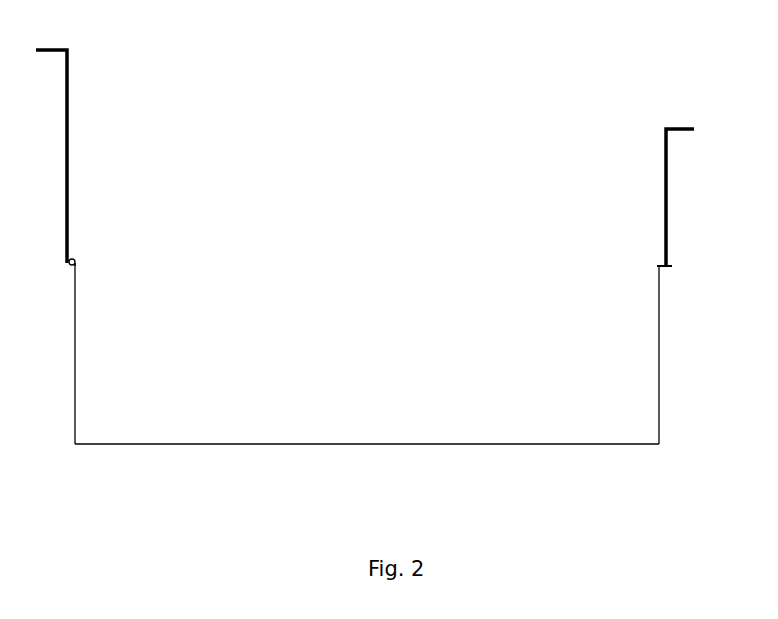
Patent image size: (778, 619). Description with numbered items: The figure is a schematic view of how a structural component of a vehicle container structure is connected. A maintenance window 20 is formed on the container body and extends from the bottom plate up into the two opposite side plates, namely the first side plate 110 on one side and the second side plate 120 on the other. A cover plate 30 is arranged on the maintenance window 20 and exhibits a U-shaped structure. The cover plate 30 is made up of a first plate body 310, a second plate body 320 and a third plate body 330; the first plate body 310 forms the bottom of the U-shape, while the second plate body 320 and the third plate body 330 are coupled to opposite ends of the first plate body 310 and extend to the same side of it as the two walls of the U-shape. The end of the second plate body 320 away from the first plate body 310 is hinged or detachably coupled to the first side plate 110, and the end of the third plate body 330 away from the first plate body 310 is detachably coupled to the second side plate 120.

The maintenance window 20 is at (408, 459).
The cover plate 30 is at (392, 353).
The first side plate 110 is at (69, 170).
The second side plate 120 is at (669, 187).
The first plate body 310 is at (300, 444).
The second plate body 320 is at (76, 362).
The third plate body 330 is at (659, 343).